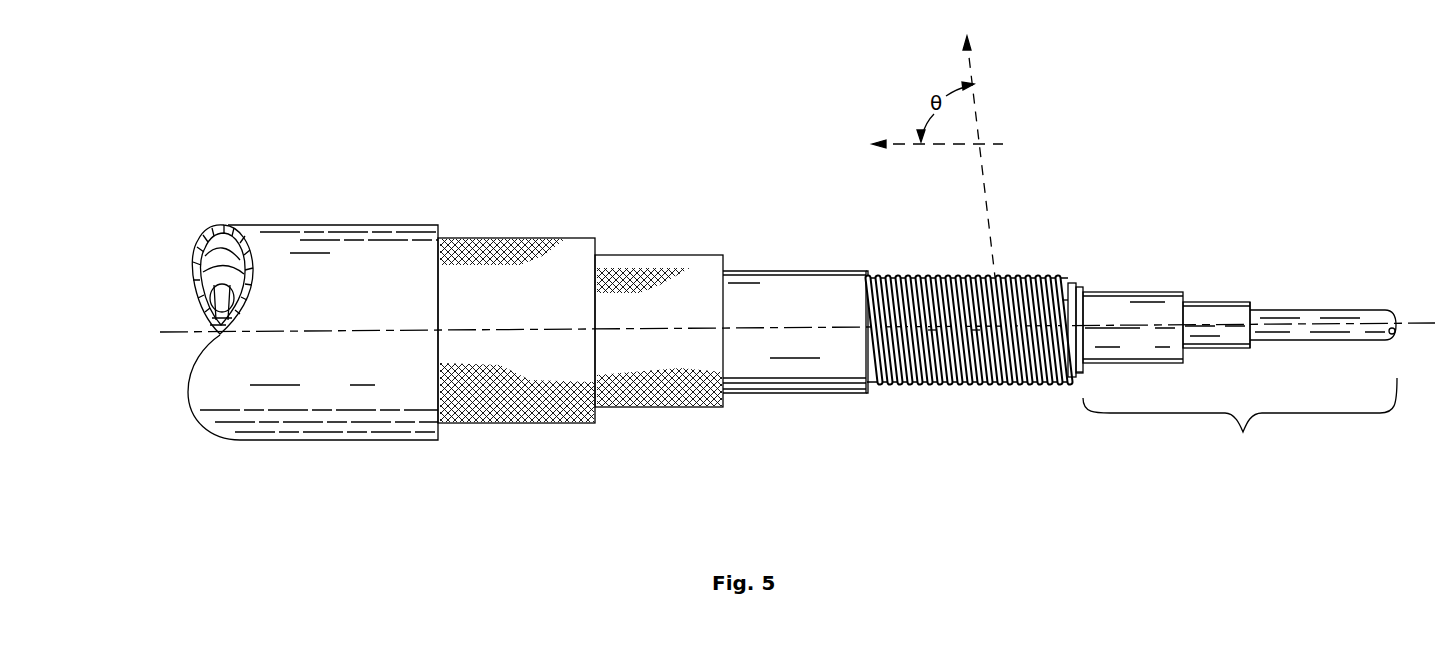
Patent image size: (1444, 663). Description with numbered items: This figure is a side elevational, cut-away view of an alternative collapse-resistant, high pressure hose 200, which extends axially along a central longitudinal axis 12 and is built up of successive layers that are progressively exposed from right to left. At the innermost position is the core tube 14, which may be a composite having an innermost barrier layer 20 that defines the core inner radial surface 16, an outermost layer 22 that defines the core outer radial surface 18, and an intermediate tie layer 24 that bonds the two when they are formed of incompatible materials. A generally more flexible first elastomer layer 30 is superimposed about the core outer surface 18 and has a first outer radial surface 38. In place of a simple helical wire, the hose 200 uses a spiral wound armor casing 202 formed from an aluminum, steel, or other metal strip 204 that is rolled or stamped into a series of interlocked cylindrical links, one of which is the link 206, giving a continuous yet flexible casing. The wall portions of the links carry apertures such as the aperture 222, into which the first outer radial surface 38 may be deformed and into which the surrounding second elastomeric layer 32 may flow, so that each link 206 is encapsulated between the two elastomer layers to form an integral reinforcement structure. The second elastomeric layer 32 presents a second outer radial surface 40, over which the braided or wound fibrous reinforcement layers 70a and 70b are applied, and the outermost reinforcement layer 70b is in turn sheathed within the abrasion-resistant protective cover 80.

The central longitudinal axis 12 is at (1427, 322).
The core tube 14 is at (1242, 440).
The inner radial surface 16 is at (1396, 336).
The outer radial surface 18 is at (1122, 291).
The barrier layer 20 is at (1345, 310).
The outermost layer 22 is at (1188, 302).
The intermediate tie layer 24 is at (1262, 307).
The first elastomer layer 30 is at (1083, 372).
The second elastomeric layer 32 is at (880, 390).
The first outer radial surface 38 is at (1078, 283).
The second outer radial surface 40 is at (803, 270).
The first fibrous reinforcement layer 70a is at (728, 256).
The outermost fibrous reinforcement layer 70b is at (597, 247).
The protective cover 80 is at (440, 226).
The hose 200 is at (1134, 86).
The armor casing 202 is at (930, 266).
The metal strip 204 is at (1073, 382).
The cylindrical link 206 is at (932, 382).
The aperture 222 is at (975, 382).